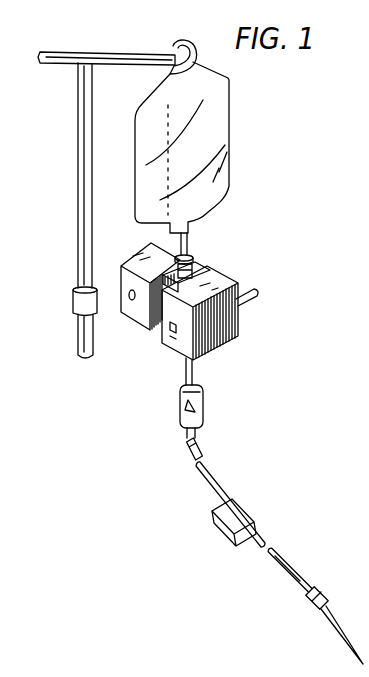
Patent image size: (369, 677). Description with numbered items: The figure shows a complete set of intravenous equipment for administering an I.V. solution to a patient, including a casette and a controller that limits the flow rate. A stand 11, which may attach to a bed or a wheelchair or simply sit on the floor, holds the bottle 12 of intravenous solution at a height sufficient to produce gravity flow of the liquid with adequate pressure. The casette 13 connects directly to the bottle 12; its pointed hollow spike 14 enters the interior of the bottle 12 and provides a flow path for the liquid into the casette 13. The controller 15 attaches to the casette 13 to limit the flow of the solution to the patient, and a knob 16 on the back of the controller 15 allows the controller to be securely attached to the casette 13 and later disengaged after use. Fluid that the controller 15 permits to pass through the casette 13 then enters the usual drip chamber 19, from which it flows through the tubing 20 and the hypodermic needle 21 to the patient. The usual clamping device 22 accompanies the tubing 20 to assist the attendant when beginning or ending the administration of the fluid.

The stand 11 is at (80, 192).
The bottle 12 is at (214, 137).
The casette 13 is at (197, 278).
The pointed hollow spike 14 is at (189, 244).
The controller 15 is at (227, 337).
The knob 16 is at (255, 300).
The drip chamber 19 is at (204, 402).
The tubing 20 is at (206, 474).
The hypodermic needle 21 is at (322, 602).
The clamping device 22 is at (235, 506).